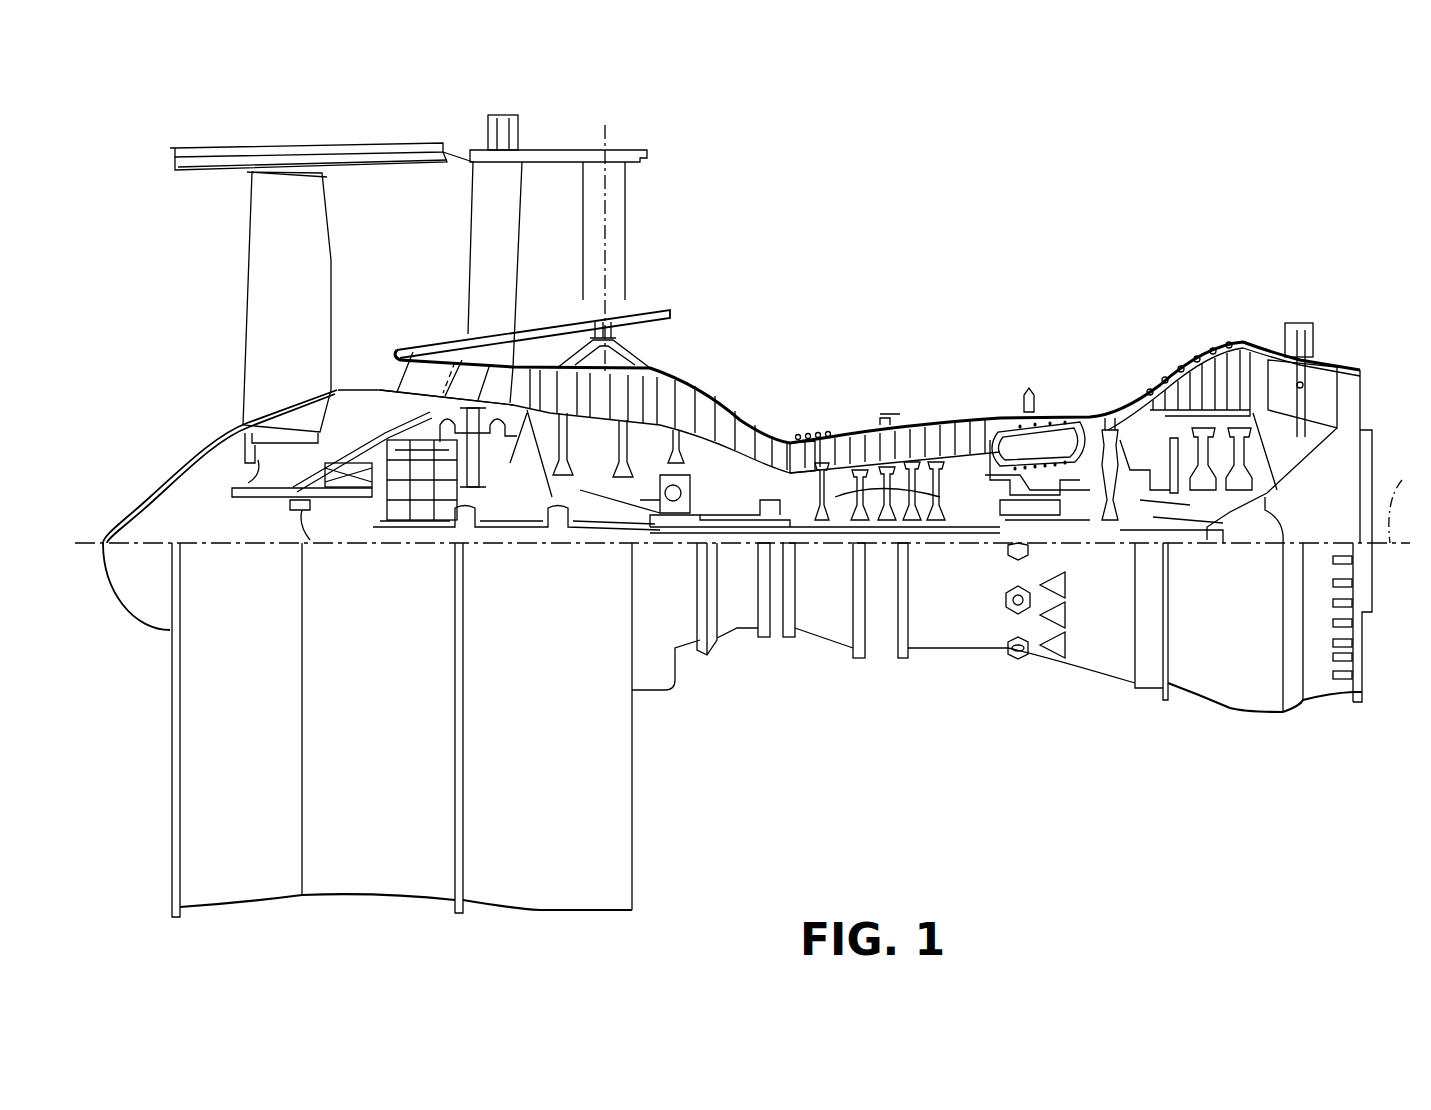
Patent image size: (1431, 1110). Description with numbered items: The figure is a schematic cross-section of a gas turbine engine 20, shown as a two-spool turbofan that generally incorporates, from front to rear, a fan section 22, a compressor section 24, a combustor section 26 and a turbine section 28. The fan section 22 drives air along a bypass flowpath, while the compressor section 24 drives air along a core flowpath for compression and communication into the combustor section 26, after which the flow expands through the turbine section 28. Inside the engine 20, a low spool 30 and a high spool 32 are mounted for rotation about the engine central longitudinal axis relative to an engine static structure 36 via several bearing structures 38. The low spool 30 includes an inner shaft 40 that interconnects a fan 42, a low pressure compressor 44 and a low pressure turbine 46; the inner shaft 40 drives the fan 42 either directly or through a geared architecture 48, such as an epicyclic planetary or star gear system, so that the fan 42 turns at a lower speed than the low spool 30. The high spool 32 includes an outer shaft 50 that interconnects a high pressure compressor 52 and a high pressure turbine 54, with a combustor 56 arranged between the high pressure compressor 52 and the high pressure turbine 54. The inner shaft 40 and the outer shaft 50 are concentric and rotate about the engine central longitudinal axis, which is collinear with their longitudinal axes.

The gas turbine engine 20 is at (1097, 215).
The fan section 22 is at (288, 352).
The compressor section 24 is at (920, 279).
The combustor section 26 is at (1042, 279).
The turbine section 28 is at (1297, 279).
The low spool 30 is at (715, 499).
The high spool 32 is at (942, 494).
The engine static structure 36 is at (883, 653).
The bearing structures 38 is at (493, 617).
The inner shaft 40 is at (1075, 508).
The fan 42 is at (300, 325).
The low pressure compressor 44 is at (660, 393).
The low pressure turbine 46 is at (1207, 376).
The geared architecture 48 is at (416, 500).
The outer shaft 50 is at (1075, 520).
The high pressure compressor 52 is at (807, 458).
The high pressure turbine 54 is at (1108, 430).
The combustor 56 is at (1038, 449).